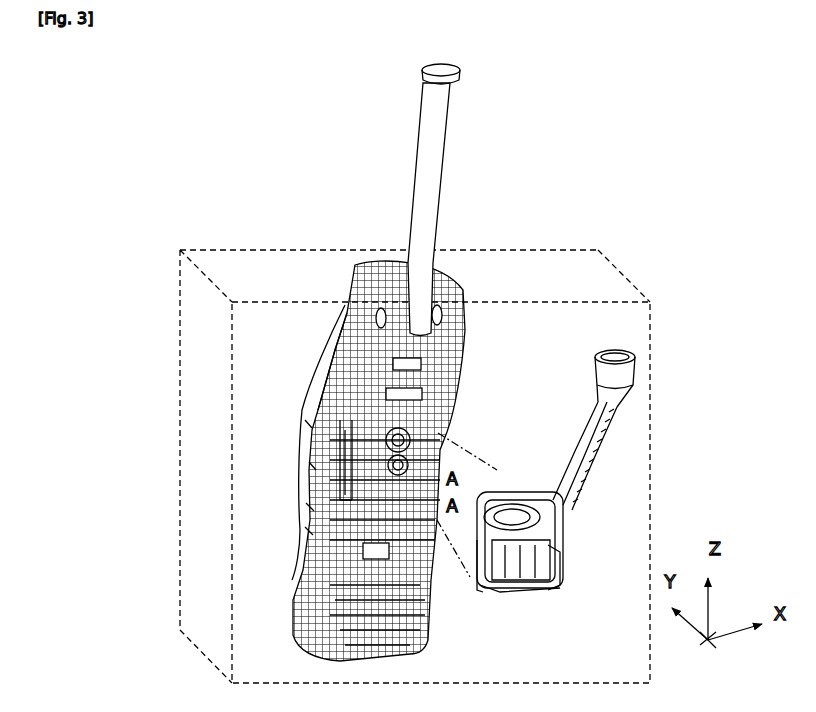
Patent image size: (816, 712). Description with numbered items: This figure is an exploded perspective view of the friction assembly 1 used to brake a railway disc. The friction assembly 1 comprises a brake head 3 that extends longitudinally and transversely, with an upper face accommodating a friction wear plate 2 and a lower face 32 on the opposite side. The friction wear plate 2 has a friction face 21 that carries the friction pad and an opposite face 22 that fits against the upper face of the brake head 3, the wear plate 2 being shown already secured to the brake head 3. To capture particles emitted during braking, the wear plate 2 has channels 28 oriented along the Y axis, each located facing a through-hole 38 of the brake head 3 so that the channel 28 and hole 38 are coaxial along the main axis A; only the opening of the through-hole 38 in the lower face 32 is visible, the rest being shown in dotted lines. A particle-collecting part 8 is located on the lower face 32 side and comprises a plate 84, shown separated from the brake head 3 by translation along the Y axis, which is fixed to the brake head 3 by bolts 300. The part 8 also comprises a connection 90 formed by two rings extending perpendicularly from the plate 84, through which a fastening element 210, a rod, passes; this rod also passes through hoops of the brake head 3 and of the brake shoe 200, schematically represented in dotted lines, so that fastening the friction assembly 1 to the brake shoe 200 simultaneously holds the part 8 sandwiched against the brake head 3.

The brake shoe 200 is at (262, 272).
The friction assembly 1 is at (345, 277).
The fastening element 210 is at (433, 195).
The friction wear plate 2 is at (308, 415).
The brake head 3 is at (323, 390).
The friction face 21 is at (305, 423).
The channel 28 is at (310, 467).
The opposite face 22 is at (307, 507).
The lower face 32 is at (307, 530).
The through-hole 38 is at (437, 443).
The part 8 is at (503, 487).
The plate 84 is at (515, 500).
The connection 90 is at (545, 548).
The bolt 300 is at (482, 585).